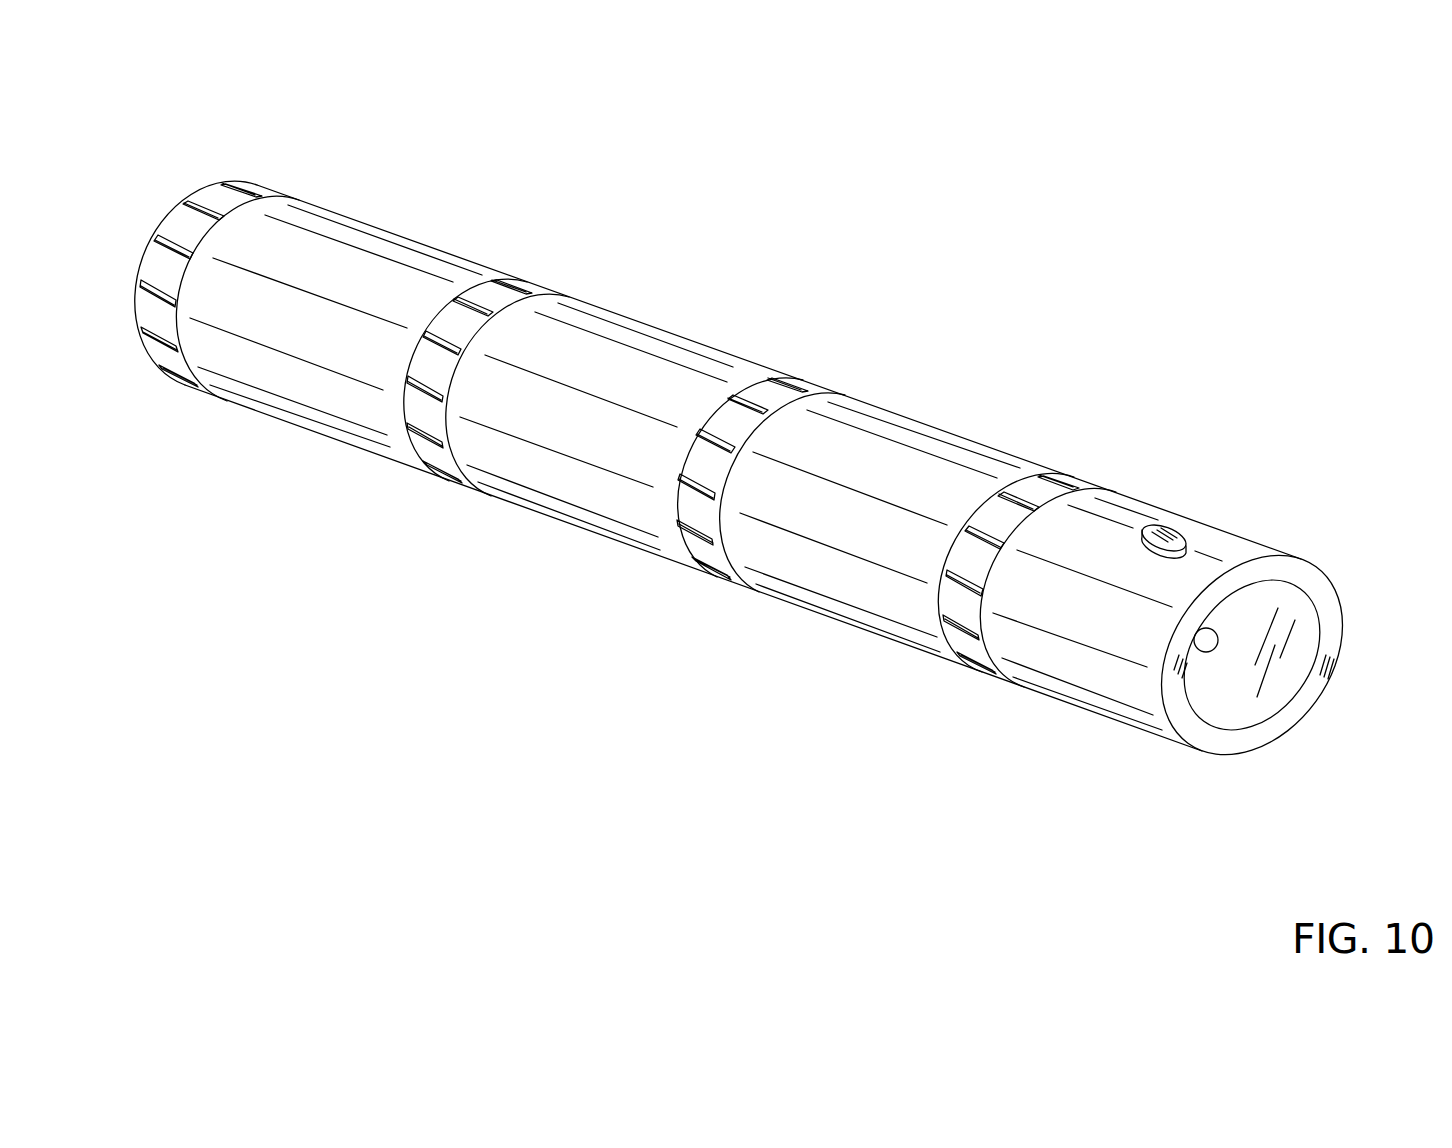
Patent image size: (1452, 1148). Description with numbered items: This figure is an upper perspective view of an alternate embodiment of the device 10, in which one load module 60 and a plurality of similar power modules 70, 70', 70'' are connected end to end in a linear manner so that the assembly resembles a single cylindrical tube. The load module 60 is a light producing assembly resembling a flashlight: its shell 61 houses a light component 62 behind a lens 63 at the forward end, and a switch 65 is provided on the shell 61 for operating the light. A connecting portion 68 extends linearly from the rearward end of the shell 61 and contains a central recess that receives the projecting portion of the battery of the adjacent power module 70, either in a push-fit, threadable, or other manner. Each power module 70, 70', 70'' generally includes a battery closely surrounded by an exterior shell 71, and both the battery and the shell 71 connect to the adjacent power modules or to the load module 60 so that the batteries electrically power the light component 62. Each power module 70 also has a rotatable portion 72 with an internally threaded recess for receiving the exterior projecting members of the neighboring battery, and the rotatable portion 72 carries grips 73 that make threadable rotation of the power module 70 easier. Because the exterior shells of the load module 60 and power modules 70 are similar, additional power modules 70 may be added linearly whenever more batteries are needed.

The device 10 is at (1197, 162).
The load module 60 is at (1208, 523).
The shell 61 is at (1097, 675).
The light component 62 is at (1207, 648).
The lens 63 is at (1287, 687).
The switch 65 is at (1170, 533).
The connecting portion 68 is at (958, 607).
The power module 70 is at (926, 407).
The power module 70' is at (615, 376).
The power module 70'' is at (355, 272).
The exterior shell 71 is at (790, 569).
The rotatable portion 72 is at (812, 390).
The grips 73 is at (684, 481).